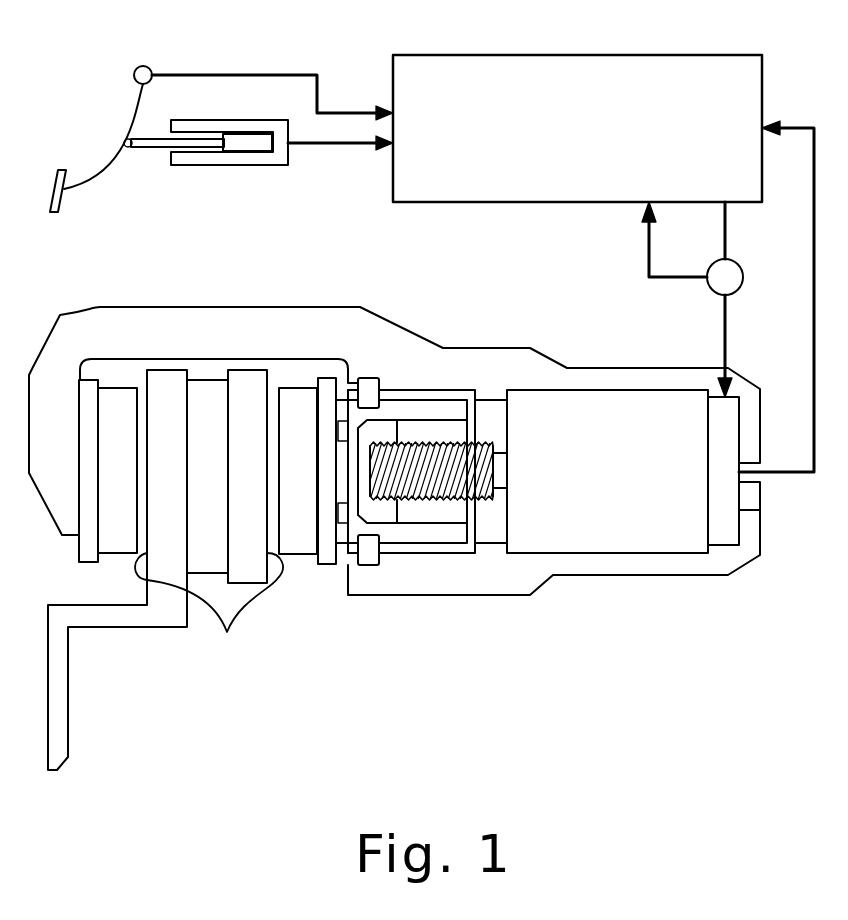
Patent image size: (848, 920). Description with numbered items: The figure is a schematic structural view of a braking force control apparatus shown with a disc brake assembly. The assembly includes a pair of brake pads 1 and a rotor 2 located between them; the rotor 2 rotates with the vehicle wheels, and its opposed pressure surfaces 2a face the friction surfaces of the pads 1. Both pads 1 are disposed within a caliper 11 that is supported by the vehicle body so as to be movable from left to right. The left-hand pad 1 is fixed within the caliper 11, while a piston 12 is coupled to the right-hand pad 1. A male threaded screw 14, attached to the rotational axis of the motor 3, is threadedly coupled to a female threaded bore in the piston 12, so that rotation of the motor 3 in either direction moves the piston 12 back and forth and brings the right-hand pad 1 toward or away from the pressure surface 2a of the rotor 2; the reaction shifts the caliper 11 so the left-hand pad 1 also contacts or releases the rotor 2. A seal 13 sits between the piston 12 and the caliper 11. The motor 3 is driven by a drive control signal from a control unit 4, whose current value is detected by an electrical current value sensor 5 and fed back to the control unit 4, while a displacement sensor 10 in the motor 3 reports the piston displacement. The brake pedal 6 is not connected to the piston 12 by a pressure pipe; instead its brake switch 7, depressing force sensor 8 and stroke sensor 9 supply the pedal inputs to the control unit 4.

The brake pads 1 is at (117, 555).
The rotor 2 is at (274, 677).
The pressure surfaces 2a is at (209, 609).
The motor 3 is at (612, 388).
The control unit 4 is at (584, 55).
The electrical current value sensor 5 is at (744, 276).
The brake pedal 6 is at (53, 185).
The brake switch 7 is at (134, 72).
The depressing force sensor 8 is at (250, 150).
The stroke sensor 9 is at (230, 121).
The displacement sensor 10 is at (760, 510).
The caliper 11 is at (234, 322).
The piston 12 is at (422, 536).
The seal 13 is at (369, 378).
The male threaded screw 14 is at (437, 440).